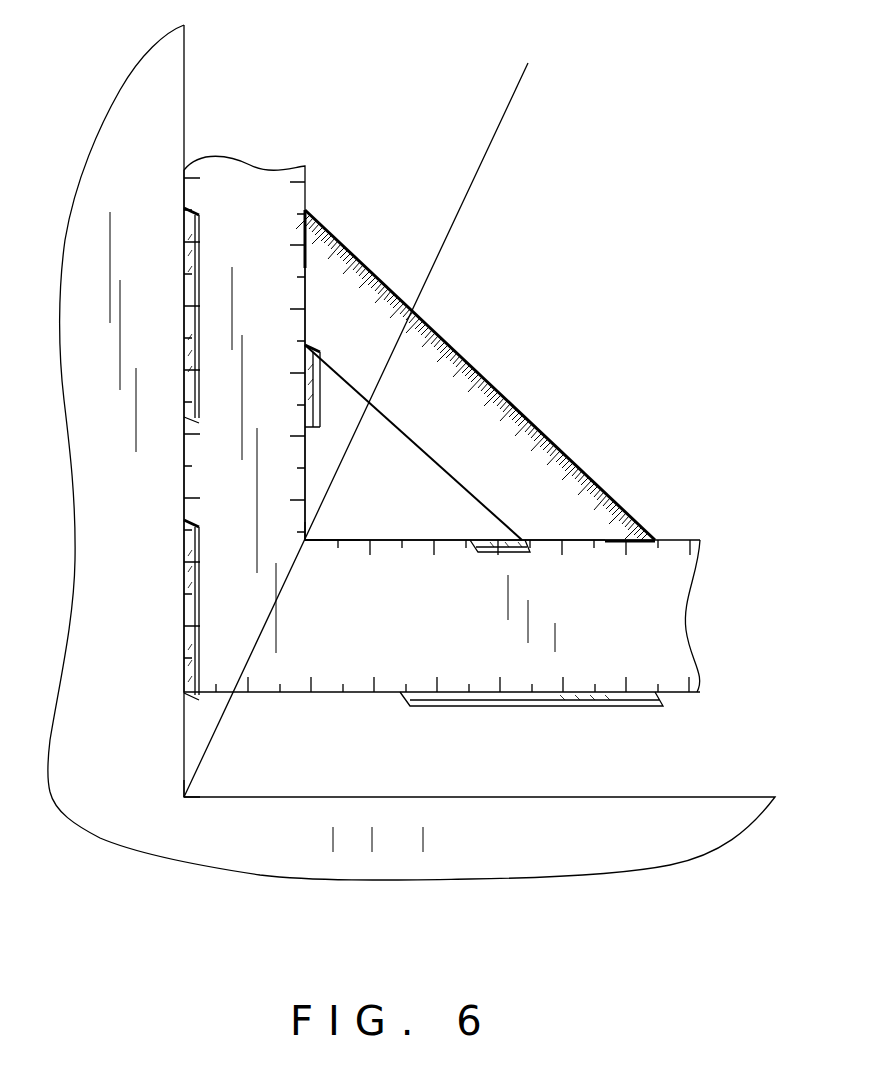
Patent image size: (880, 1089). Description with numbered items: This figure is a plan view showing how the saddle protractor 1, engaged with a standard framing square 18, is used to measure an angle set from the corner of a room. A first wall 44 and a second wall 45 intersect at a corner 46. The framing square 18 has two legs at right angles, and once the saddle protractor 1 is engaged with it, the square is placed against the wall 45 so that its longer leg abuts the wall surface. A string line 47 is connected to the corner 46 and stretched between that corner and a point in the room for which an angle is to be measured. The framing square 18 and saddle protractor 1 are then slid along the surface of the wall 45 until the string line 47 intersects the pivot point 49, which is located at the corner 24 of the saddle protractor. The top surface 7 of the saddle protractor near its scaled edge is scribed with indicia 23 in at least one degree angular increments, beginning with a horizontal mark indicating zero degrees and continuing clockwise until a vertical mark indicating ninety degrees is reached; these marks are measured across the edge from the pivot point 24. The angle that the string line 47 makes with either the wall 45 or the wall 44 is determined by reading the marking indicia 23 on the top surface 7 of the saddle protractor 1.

The saddle protractor 1 is at (600, 490).
The top surface 7 is at (487, 480).
The framing square 18 is at (660, 623).
The indicia 23 is at (470, 365).
The pivot point 24 is at (305, 540).
The first wall 44 is at (678, 797).
The second wall 45 is at (185, 86).
The corner 46 is at (184, 797).
The string line 47 is at (480, 173).
The pivot point 49 is at (305, 540).